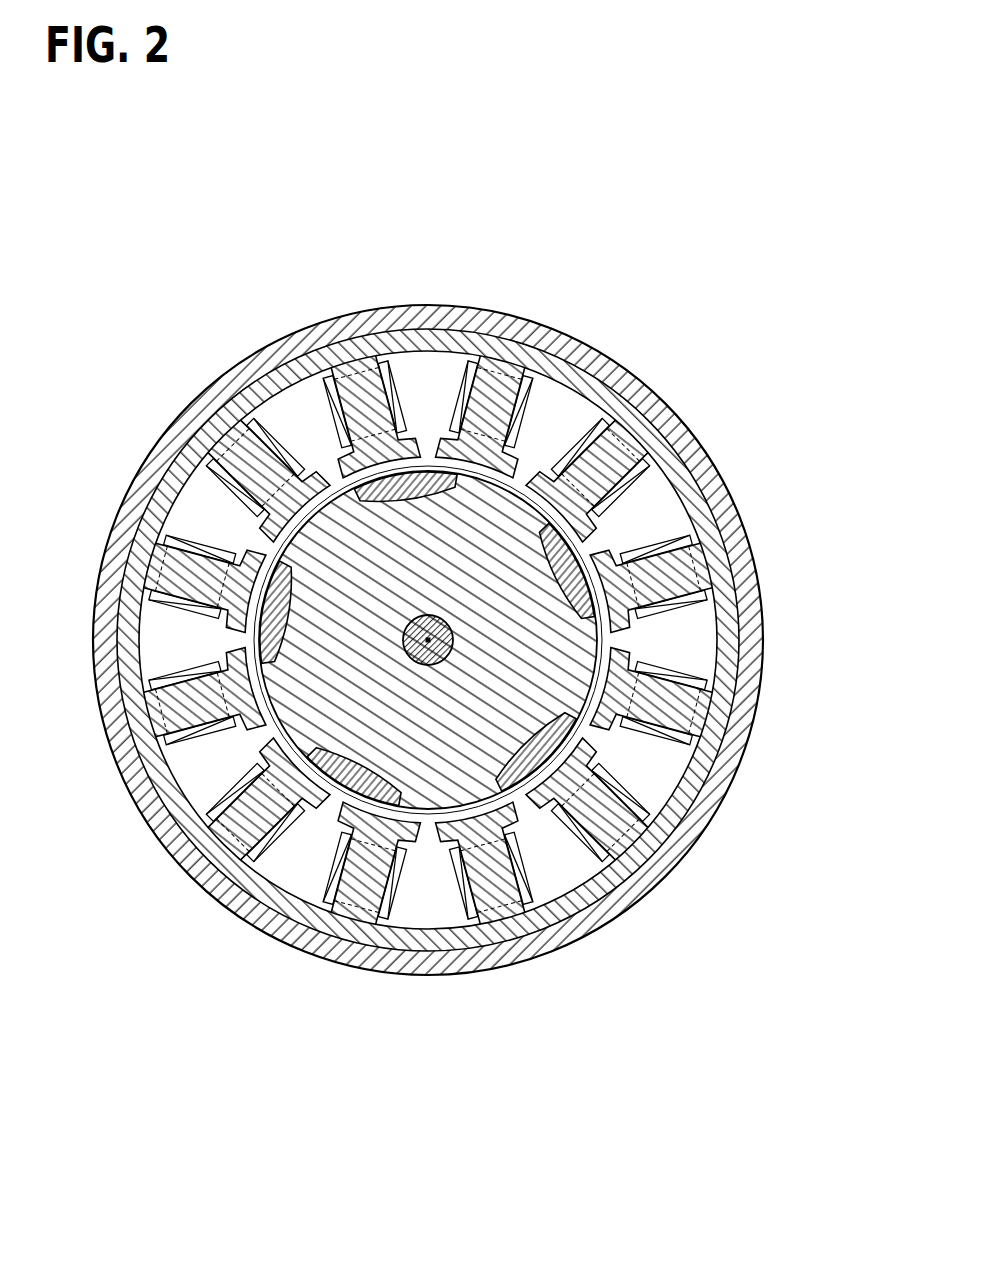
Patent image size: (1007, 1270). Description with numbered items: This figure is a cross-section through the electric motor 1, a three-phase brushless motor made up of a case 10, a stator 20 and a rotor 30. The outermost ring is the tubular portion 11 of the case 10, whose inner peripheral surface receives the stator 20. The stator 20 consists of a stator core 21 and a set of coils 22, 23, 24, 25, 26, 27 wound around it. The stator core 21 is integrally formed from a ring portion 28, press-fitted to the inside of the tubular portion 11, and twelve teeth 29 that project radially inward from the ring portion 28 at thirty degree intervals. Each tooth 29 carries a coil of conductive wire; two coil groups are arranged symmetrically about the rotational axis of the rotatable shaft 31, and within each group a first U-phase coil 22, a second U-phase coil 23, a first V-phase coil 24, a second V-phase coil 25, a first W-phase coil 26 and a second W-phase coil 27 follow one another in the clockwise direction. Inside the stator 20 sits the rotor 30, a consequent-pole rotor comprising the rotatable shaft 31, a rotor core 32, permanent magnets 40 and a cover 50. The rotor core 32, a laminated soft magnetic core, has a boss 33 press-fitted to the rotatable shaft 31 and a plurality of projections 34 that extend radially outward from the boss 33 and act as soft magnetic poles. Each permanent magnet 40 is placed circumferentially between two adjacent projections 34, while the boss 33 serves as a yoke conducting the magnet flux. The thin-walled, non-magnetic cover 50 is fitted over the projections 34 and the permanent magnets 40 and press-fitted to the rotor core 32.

The electric motor 1 is at (138, 344).
The case 10 is at (160, 436).
The tubular portion 11 is at (465, 322).
The stator 20 is at (428, 487).
The stator core 21 is at (343, 237).
The U1-coil 22 is at (533, 395).
The U2-coil 23 is at (627, 480).
The V1-coil 24 is at (588, 592).
The V2-coil 25 is at (182, 513).
The W1-coil 26 is at (258, 410).
The W2-coil 27 is at (325, 392).
The ring portion 28 is at (400, 343).
The teeth 29 is at (375, 417).
The rotor 30 is at (453, 628).
The rotatable shaft 31 is at (455, 650).
The rotor core 32 is at (375, 1069).
The boss 33 is at (400, 692).
The projections 34 is at (462, 808).
The permanent magnets 40 is at (406, 399).
The cover 50 is at (286, 389).